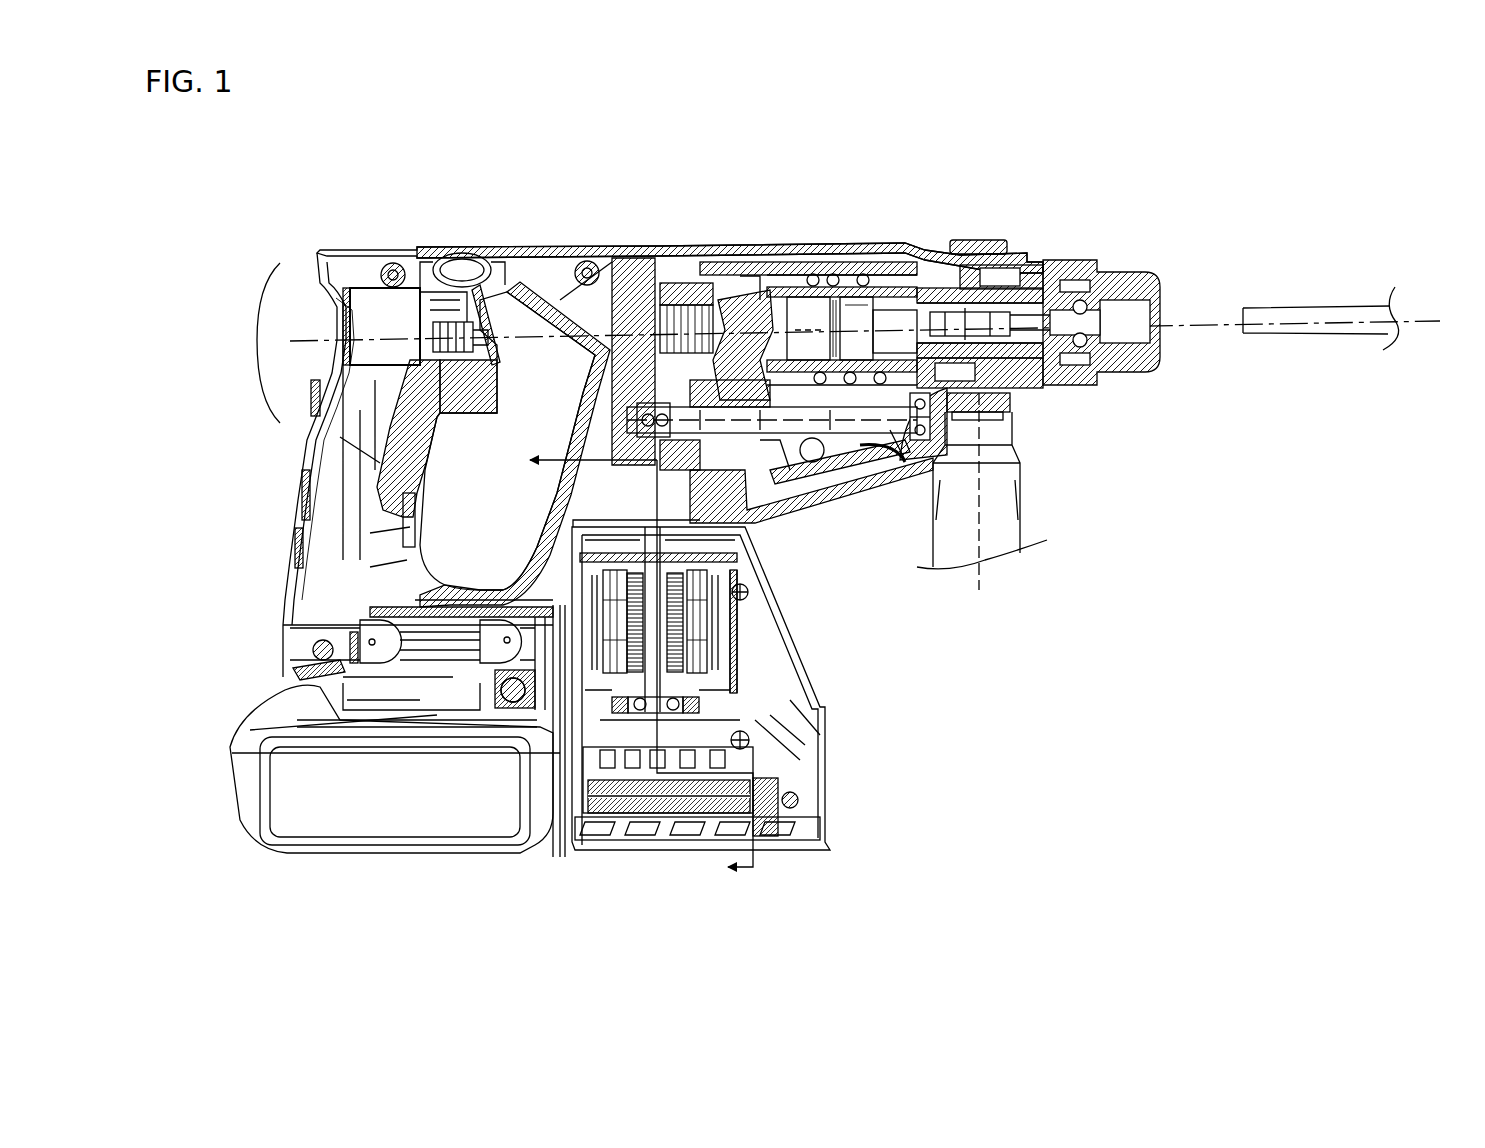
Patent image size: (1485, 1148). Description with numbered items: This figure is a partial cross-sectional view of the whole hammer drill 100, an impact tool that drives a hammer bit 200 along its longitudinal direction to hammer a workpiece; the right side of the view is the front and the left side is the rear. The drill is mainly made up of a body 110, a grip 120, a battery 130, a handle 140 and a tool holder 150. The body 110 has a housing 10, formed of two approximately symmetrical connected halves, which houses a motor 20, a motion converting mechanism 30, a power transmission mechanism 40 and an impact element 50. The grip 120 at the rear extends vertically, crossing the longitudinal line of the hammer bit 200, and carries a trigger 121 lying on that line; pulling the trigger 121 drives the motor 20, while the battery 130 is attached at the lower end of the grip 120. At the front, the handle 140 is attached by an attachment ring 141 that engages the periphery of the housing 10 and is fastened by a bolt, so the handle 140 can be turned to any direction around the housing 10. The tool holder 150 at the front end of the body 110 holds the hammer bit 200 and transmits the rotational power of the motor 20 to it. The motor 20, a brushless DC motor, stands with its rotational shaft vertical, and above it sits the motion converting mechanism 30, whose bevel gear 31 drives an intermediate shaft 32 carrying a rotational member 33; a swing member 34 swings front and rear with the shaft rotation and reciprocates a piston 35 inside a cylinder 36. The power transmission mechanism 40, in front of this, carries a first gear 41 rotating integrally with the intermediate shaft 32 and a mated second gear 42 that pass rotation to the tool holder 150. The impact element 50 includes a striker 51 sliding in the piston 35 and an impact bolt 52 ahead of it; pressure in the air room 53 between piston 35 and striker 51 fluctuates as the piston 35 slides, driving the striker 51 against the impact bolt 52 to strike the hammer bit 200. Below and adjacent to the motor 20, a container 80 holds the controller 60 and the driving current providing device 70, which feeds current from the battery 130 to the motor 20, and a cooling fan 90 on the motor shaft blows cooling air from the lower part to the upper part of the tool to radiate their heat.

The hammer drill 100 is at (1062, 156).
The housing 10 is at (780, 246).
The body 110 is at (597, 241).
The grip 120 is at (363, 442).
The trigger 121 is at (497, 345).
The battery 130 is at (267, 718).
The handle 140 is at (1023, 522).
The attachment ring 141 is at (958, 240).
The tool holder 150 is at (1110, 272).
The hammer bit 200 is at (1263, 313).
The motor 20 is at (700, 620).
The motion converting mechanism 30 is at (770, 497).
The bevel gear 31 is at (612, 372).
The intermediate shaft 32 is at (830, 480).
The rotational member 33 is at (833, 470).
The swing member 34 is at (693, 243).
The piston 35 is at (843, 247).
The cylinder 36 is at (757, 247).
The power transmission mechanism 40 is at (1000, 410).
The first gear 41 is at (933, 468).
The second gear 42 is at (893, 467).
The impact element 50 is at (907, 247).
The striker 51 is at (867, 273).
The impact bolt 52 is at (1030, 262).
The air room 53 is at (805, 273).
The controller 60 is at (628, 812).
The driving current providing device 70 is at (748, 745).
The container 80 is at (598, 850).
The cooling fan 90 is at (760, 545).